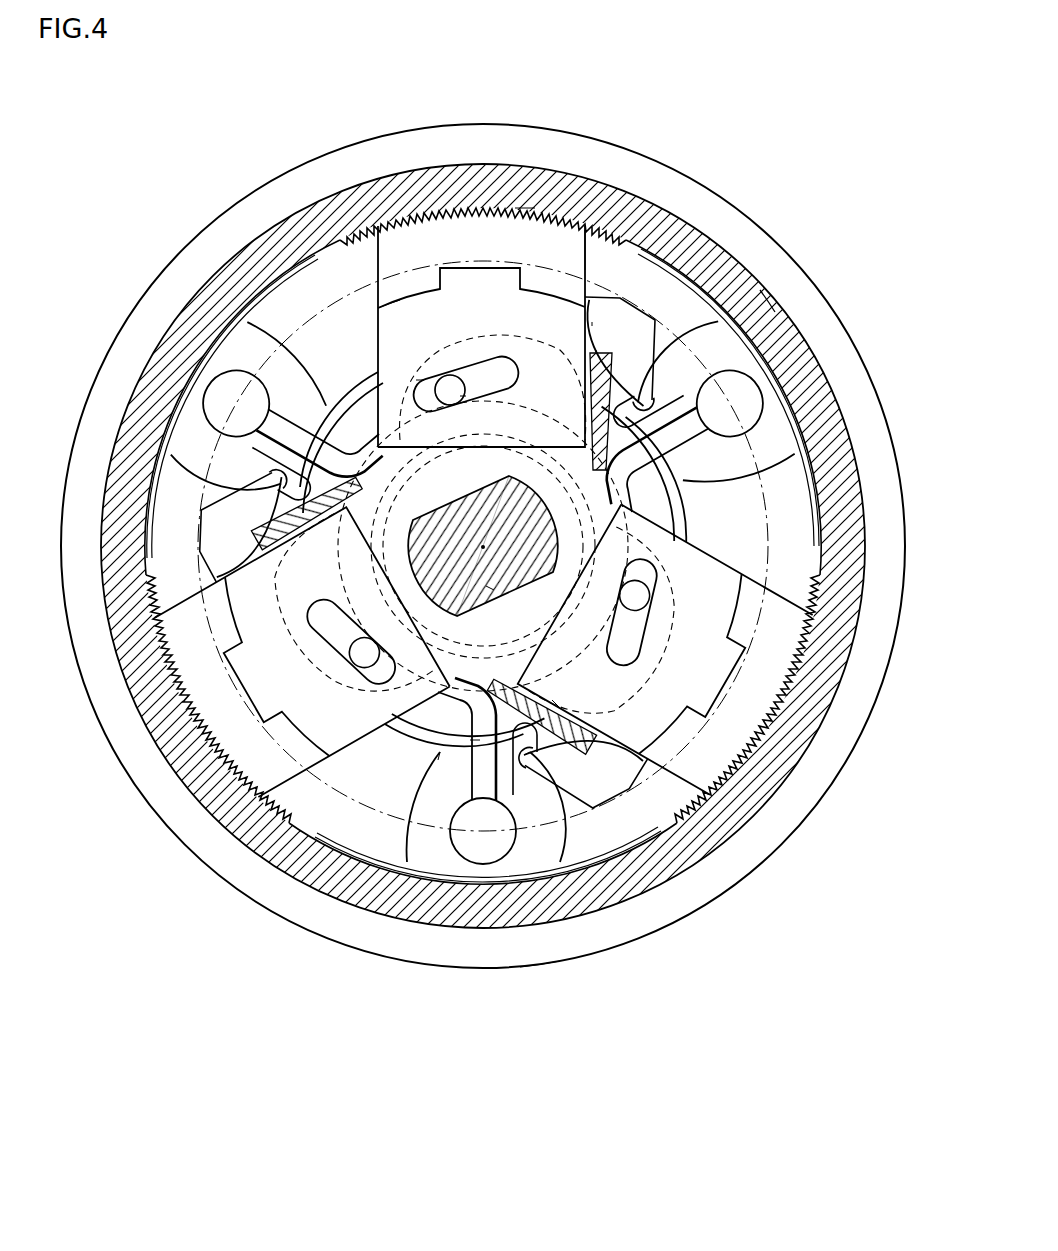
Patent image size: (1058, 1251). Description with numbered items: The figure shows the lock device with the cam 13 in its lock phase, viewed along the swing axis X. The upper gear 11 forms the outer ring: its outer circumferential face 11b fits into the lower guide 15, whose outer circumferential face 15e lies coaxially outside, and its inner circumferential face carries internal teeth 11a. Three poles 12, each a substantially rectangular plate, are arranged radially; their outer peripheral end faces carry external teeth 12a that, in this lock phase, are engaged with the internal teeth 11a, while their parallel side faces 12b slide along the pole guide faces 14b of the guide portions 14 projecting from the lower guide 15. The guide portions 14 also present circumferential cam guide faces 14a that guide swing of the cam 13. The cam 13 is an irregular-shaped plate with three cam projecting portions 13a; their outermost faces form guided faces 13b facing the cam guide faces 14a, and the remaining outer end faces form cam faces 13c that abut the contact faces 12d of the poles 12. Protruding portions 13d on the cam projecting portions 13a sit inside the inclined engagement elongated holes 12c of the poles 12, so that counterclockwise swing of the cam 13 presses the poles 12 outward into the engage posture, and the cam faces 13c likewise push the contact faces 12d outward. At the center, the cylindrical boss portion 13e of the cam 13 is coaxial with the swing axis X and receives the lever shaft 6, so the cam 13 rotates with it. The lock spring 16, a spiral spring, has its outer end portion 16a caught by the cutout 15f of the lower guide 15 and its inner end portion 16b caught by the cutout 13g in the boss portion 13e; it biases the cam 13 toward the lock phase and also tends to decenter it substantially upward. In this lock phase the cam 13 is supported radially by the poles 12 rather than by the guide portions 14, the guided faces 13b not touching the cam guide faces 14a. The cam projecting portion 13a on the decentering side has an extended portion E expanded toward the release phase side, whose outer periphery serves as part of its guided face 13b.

The lever shaft 6 is at (418, 553).
The upper gear 11 is at (648, 900).
The internal teeth 11a is at (612, 240).
The outer circumferential face 11b is at (760, 290).
The pole 12 is at (474, 240).
The external teeth 12a is at (525, 208).
The side faces 12b is at (605, 270).
The engagement elongated hole 12c is at (450, 395).
The contact face 12d is at (420, 380).
The cam 13 is at (568, 732).
The cam projecting portions 13a is at (596, 352).
The guided faces 13b is at (592, 324).
The cam faces 13c is at (472, 320).
The protruding portions 13d is at (462, 398).
The boss portion 13e is at (556, 704).
The cutout 13g is at (490, 588).
The guide portions 14 is at (292, 305).
The cam guide faces 14a is at (636, 410).
The pole guide faces 14b is at (380, 264).
The lower guide 15 is at (412, 972).
The outer circumferential face 15e is at (538, 968).
The cutout 15f is at (475, 740).
The lock spring 16 is at (316, 458).
The outer end portion 16a is at (440, 752).
The inner end portion 16b is at (472, 612).
The swing axis X is at (483, 547).
The extended portion E is at (616, 420).